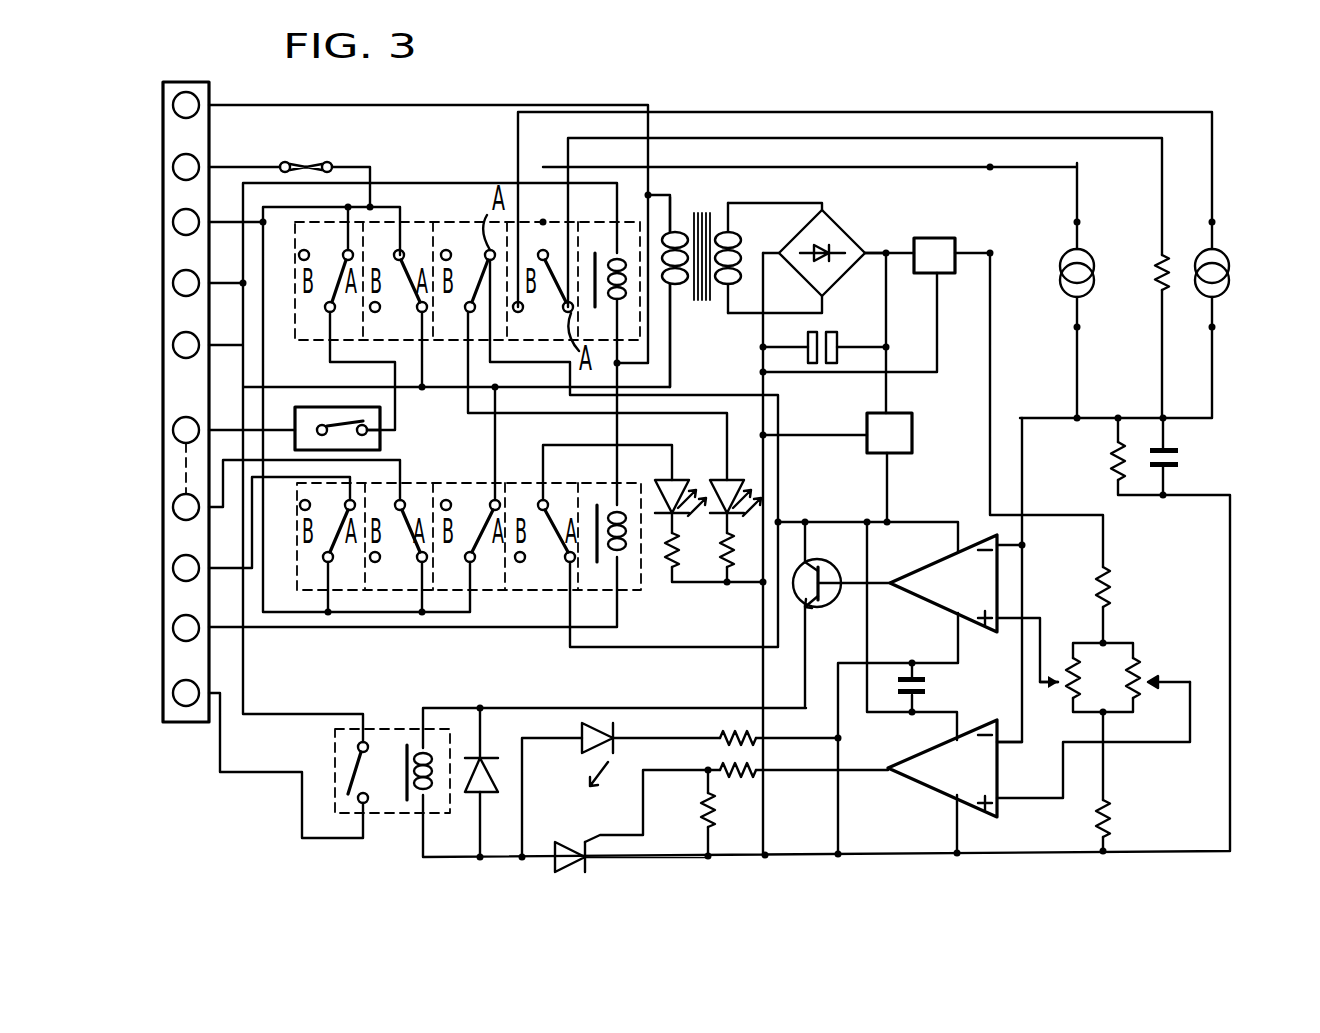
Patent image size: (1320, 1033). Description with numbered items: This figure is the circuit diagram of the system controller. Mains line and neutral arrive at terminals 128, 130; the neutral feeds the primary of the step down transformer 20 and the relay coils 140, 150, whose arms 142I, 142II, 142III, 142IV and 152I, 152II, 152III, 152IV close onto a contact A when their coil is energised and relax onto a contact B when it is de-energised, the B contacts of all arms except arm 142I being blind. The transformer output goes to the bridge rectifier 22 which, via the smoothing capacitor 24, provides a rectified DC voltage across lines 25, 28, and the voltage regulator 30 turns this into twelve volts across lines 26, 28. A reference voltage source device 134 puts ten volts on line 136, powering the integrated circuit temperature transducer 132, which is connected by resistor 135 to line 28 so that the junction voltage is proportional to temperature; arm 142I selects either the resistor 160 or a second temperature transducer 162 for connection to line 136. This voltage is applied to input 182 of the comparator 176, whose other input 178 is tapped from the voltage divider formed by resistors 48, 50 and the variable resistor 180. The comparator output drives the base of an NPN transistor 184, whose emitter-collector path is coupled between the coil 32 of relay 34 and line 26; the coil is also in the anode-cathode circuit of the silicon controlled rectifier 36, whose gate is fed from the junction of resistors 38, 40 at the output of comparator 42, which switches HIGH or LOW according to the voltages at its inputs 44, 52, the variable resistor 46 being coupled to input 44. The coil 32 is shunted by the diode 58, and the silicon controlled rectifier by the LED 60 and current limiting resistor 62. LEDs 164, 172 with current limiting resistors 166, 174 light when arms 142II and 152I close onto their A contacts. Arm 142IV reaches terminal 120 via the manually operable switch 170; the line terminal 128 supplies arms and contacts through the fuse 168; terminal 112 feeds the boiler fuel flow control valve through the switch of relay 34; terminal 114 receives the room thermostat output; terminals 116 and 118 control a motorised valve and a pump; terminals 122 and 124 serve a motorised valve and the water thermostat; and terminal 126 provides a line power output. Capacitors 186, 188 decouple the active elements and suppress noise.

The terminal 130 is at (168, 118).
The terminal 128 is at (168, 180).
The terminal 126 is at (168, 235).
The terminal 124 is at (168, 296).
The terminal 122 is at (168, 358).
The terminal 120 is at (178, 421).
The terminal 118 is at (168, 520).
The terminal 116 is at (168, 581).
The terminal 114 is at (168, 641).
The terminal 112 is at (168, 706).
The fuse 168 is at (332, 160).
The relay arm 142IV is at (330, 250).
The relay arm 142III is at (428, 224).
The relay arm 142II is at (466, 390).
The relay arm 142I is at (543, 220).
The relay coil 140 is at (603, 243).
The step down transformer 20 is at (717, 207).
The bridge rectifier 22 is at (842, 228).
The line 25 is at (890, 245).
The smoothing capacitor 24 is at (822, 328).
The line 28 is at (759, 359).
The reference voltage source device 134 is at (955, 245).
The integrated circuit temperature transducer 132 is at (1060, 279).
The line 136 is at (950, 162).
The resistor 160 is at (1150, 278).
The IC temperature transducer 162 is at (1232, 276).
The manually operable switch 170 is at (288, 407).
The voltage regulator 30 is at (912, 420).
The line 26 is at (887, 481).
The LED 172 is at (677, 480).
The LED 164 is at (780, 468).
The current limiting resistor 174 is at (683, 553).
The current limiting resistor 166 is at (765, 522).
The relay coil 150 is at (600, 567).
The NPN transistor 184 is at (840, 570).
The comparator 176 is at (976, 602).
The comparator input 182 is at (1022, 545).
The non-inverting input 178 is at (1043, 629).
The resistor 135 is at (1105, 460).
The capacitor 188 is at (1180, 456).
The resistor 48 is at (1112, 597).
The variable resistor 46 is at (1148, 673).
The variable resistor 180 is at (1062, 688).
The resistor 50 is at (1116, 824).
The capacitor 186 is at (927, 683).
The relay arm 152IV is at (328, 540).
The relay arm 152III is at (400, 535).
The relay arm 152II is at (473, 525).
The relay arm 152I is at (545, 520).
The relay 34 is at (350, 720).
The relay coil 32 is at (413, 735).
The diode 58 is at (495, 750).
The LED 60 is at (630, 688).
The silicon controlled rectifier 36 is at (570, 800).
The current limiting resistor 62 is at (748, 690).
The resistor 38 is at (737, 780).
The resistor 40 is at (698, 810).
The comparator 42 is at (959, 762).
The comparator input 52 is at (1059, 766).
The comparator input 44 is at (1051, 819).